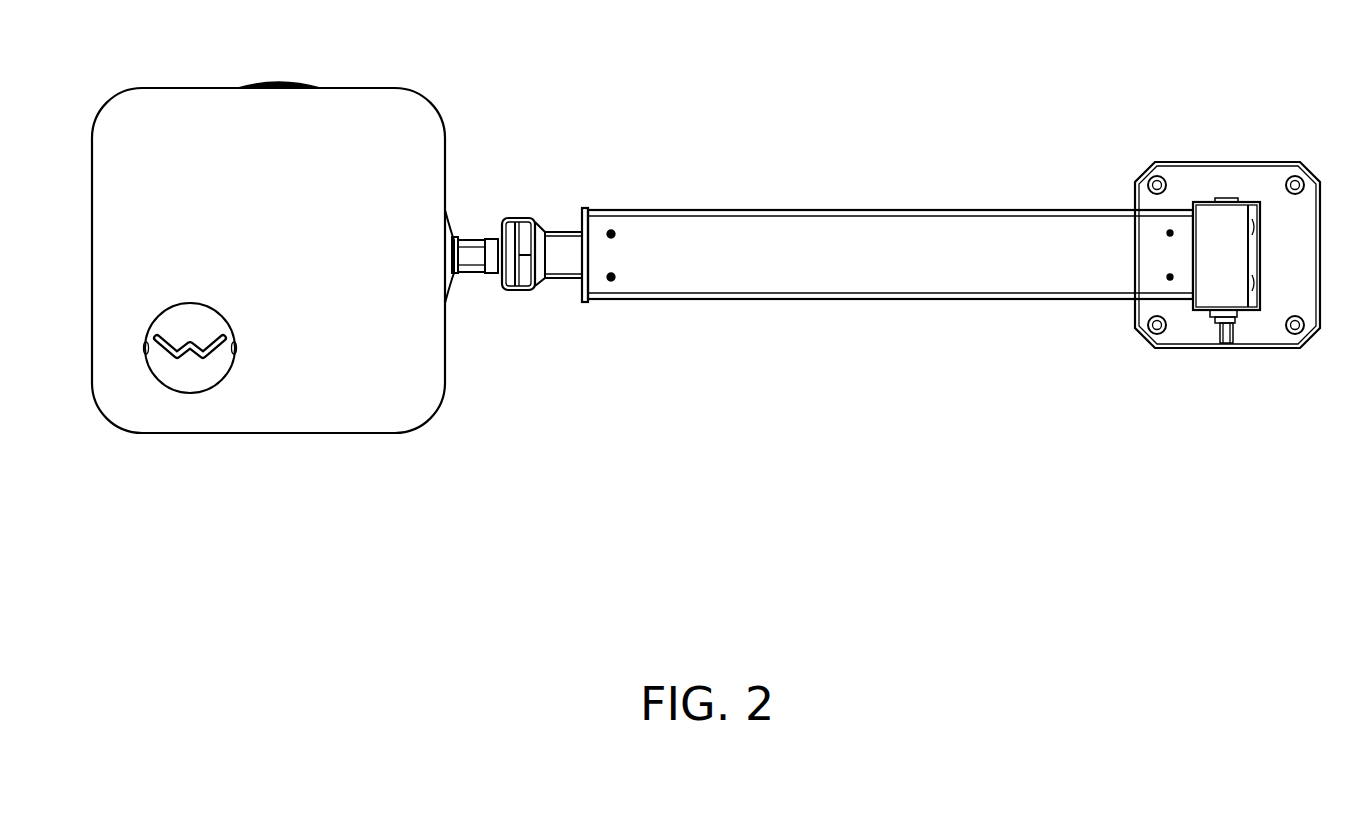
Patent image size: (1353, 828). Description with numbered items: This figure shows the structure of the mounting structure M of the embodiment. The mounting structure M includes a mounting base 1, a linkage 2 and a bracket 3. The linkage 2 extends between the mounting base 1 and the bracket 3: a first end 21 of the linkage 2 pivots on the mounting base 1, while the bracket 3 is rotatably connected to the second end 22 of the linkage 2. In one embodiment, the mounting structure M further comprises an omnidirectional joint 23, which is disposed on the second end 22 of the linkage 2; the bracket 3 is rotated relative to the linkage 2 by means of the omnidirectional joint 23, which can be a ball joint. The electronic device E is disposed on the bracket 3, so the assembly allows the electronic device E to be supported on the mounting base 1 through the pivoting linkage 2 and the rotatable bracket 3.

The electronic device E is at (134, 84).
The bracket 3 is at (280, 83).
The mounting structure M is at (893, 204).
The omnidirectional joint 23 is at (518, 291).
The second end 22 is at (599, 294).
The linkage 2 is at (893, 301).
The mounting base 1 is at (1275, 173).
The first end 21 is at (1185, 273).